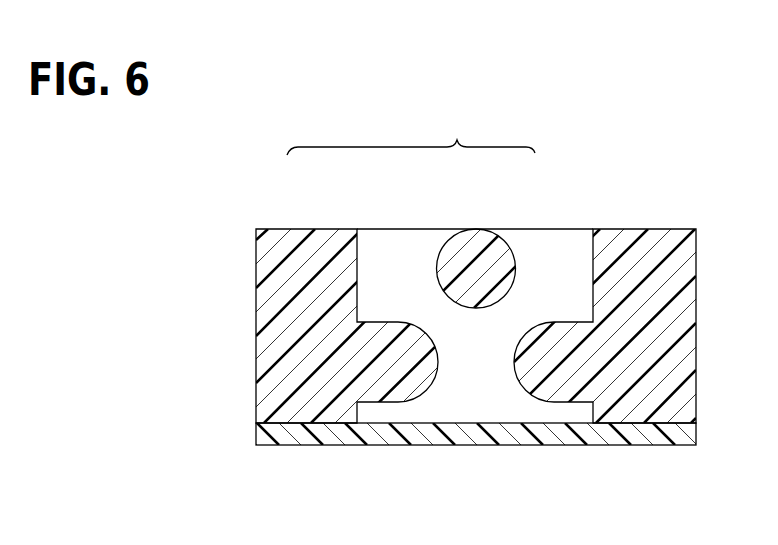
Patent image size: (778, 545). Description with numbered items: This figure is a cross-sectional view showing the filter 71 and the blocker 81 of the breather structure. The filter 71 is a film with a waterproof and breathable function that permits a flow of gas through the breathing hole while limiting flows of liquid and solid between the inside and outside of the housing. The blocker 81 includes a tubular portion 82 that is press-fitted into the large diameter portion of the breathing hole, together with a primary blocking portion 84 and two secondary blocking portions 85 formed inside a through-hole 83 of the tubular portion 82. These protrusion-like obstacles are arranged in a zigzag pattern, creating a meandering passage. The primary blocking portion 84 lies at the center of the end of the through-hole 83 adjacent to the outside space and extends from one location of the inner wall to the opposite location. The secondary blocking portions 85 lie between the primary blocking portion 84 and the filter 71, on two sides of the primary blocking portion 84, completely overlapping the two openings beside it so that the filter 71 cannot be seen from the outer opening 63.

The outer opening 63 is at (572, 229).
The filter 71 is at (483, 433).
The blocker 81 is at (411, 133).
The tubular portion 82 is at (317, 245).
The through-hole 83 is at (577, 278).
The primary blocking portion 84 is at (468, 240).
The secondary blocking portions 85 is at (413, 347).